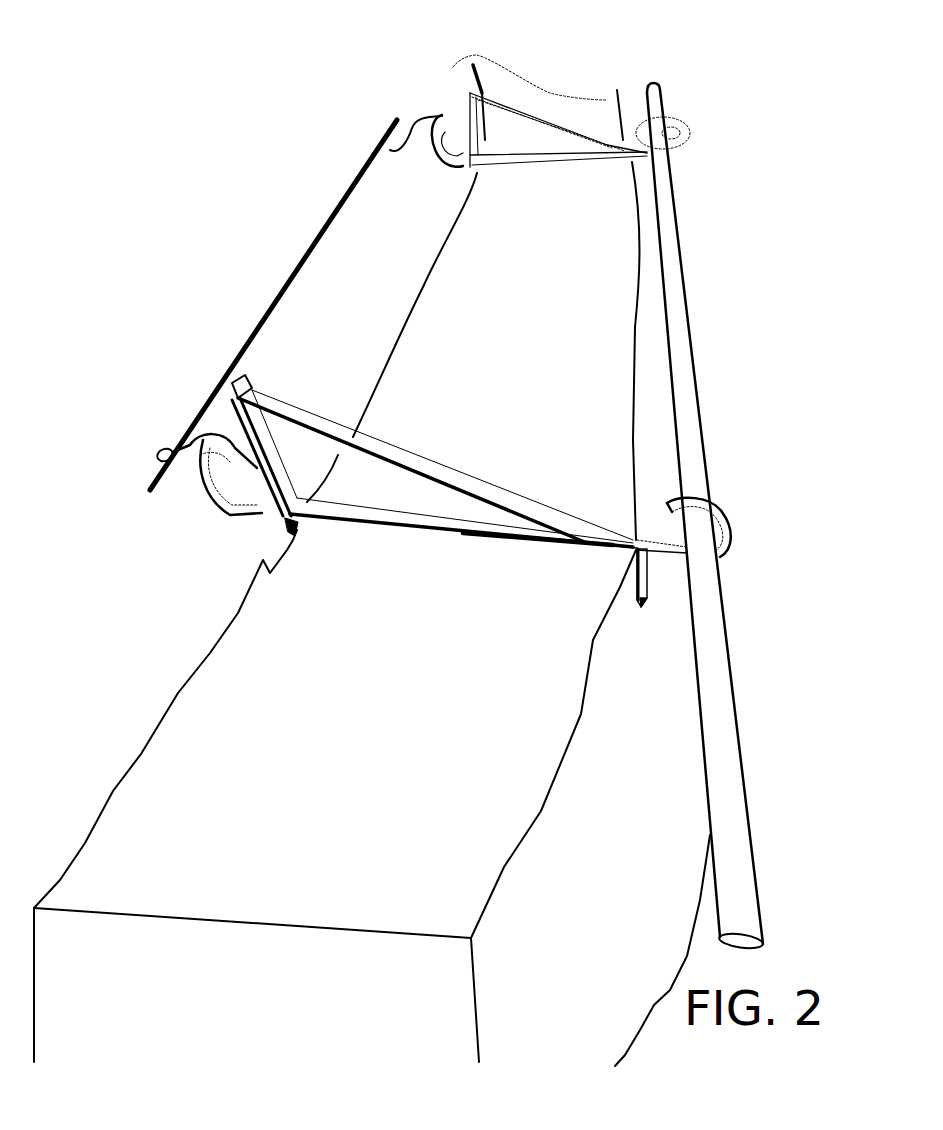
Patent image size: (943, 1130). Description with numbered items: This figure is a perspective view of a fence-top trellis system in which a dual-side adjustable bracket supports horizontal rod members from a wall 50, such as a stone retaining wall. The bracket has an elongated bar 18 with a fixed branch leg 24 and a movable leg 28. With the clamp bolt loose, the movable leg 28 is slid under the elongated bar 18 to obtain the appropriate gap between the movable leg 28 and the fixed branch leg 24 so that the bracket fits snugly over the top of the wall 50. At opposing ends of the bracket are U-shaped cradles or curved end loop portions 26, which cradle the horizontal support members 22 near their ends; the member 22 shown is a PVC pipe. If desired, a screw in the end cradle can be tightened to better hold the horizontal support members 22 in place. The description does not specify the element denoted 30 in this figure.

The elongated bar 18 is at (407, 520).
The horizontal support member 22 is at (260, 328).
The fixed branch leg 24 is at (285, 523).
The end loop portion 26 is at (393, 146).
The movable leg 28 is at (640, 609).
The cross bar channel 30 is at (513, 543).
The wall 50 is at (392, 823).